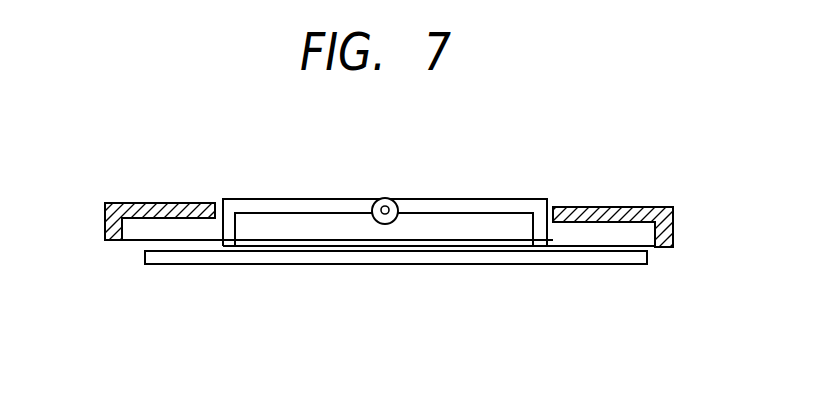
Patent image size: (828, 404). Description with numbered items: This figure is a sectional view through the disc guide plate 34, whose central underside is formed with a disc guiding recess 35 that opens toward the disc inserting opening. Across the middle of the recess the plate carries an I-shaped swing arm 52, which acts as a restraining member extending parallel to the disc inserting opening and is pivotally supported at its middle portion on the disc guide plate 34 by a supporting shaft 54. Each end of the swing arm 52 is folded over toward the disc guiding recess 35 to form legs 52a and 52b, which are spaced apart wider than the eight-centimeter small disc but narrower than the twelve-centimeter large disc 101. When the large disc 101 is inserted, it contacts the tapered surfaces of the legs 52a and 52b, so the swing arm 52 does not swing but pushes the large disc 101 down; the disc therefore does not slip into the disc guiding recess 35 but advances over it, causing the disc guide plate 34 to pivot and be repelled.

The disc guide plate 34 is at (163, 203).
The disc guiding recess 35 is at (188, 230).
The swing arm 52 is at (394, 236).
The leg 52a is at (237, 240).
The leg 52b is at (538, 246).
The supporting shaft 54 is at (391, 199).
The large disc 101 is at (611, 264).